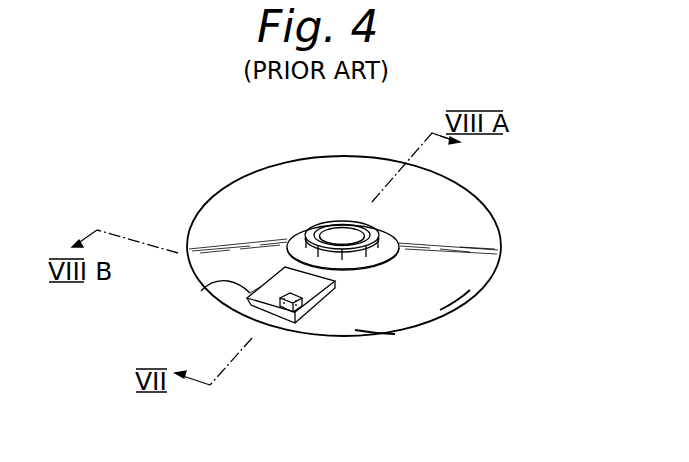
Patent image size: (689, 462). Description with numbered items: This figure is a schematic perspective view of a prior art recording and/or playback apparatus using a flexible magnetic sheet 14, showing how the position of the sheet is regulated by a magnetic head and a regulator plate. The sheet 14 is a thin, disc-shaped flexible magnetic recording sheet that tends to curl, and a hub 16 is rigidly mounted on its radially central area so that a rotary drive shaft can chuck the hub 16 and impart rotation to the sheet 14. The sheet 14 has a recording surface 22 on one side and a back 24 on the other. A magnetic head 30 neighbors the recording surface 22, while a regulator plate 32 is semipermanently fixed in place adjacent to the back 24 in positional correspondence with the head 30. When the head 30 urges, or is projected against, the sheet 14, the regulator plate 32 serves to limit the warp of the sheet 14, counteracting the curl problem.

The magnetic recording sheet 14 is at (466, 187).
The hub 16 is at (313, 226).
The recording surface 22 is at (374, 320).
The back 24 is at (457, 295).
The magnetic head 30 is at (278, 310).
The regulator plate 32 is at (211, 297).